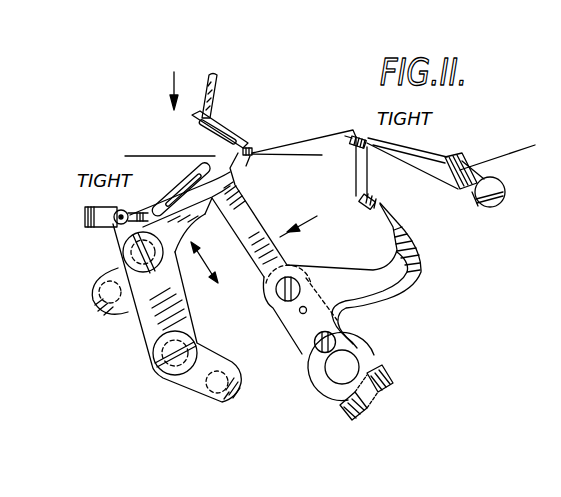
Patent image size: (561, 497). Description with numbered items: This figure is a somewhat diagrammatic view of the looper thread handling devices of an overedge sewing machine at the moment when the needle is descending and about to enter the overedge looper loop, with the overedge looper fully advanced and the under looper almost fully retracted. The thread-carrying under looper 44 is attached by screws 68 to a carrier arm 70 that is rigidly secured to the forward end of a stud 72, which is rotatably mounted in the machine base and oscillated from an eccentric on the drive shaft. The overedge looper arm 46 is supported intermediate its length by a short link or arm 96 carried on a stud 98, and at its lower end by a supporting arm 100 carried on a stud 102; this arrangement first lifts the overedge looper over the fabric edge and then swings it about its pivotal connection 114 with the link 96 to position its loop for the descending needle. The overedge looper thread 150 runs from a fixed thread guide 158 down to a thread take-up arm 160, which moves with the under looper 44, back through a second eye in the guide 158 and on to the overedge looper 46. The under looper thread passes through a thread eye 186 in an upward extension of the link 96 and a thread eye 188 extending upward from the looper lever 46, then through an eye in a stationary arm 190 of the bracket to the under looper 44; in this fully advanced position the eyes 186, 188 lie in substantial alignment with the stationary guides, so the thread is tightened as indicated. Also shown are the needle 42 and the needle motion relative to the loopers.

The blade 42 is at (223, 98).
The under looper 44 is at (243, 218).
The overedge looper arm 46 is at (188, 228).
The screws 68 is at (313, 343).
The carrier arm 70 is at (360, 334).
The stud 72 is at (357, 358).
The link 96 is at (122, 316).
The stud 98 is at (88, 302).
The supporting arm 100 is at (192, 385).
The stud 102 is at (240, 398).
The pivotal connection 114 is at (120, 228).
The overedge looper thread 150 is at (335, 108).
The fixed thread guide 158 is at (406, 162).
The thread take-up arm 160 is at (390, 284).
The thread eye 186 is at (148, 213).
The thread eye 188 is at (108, 228).
The stationary arm 190 is at (85, 217).